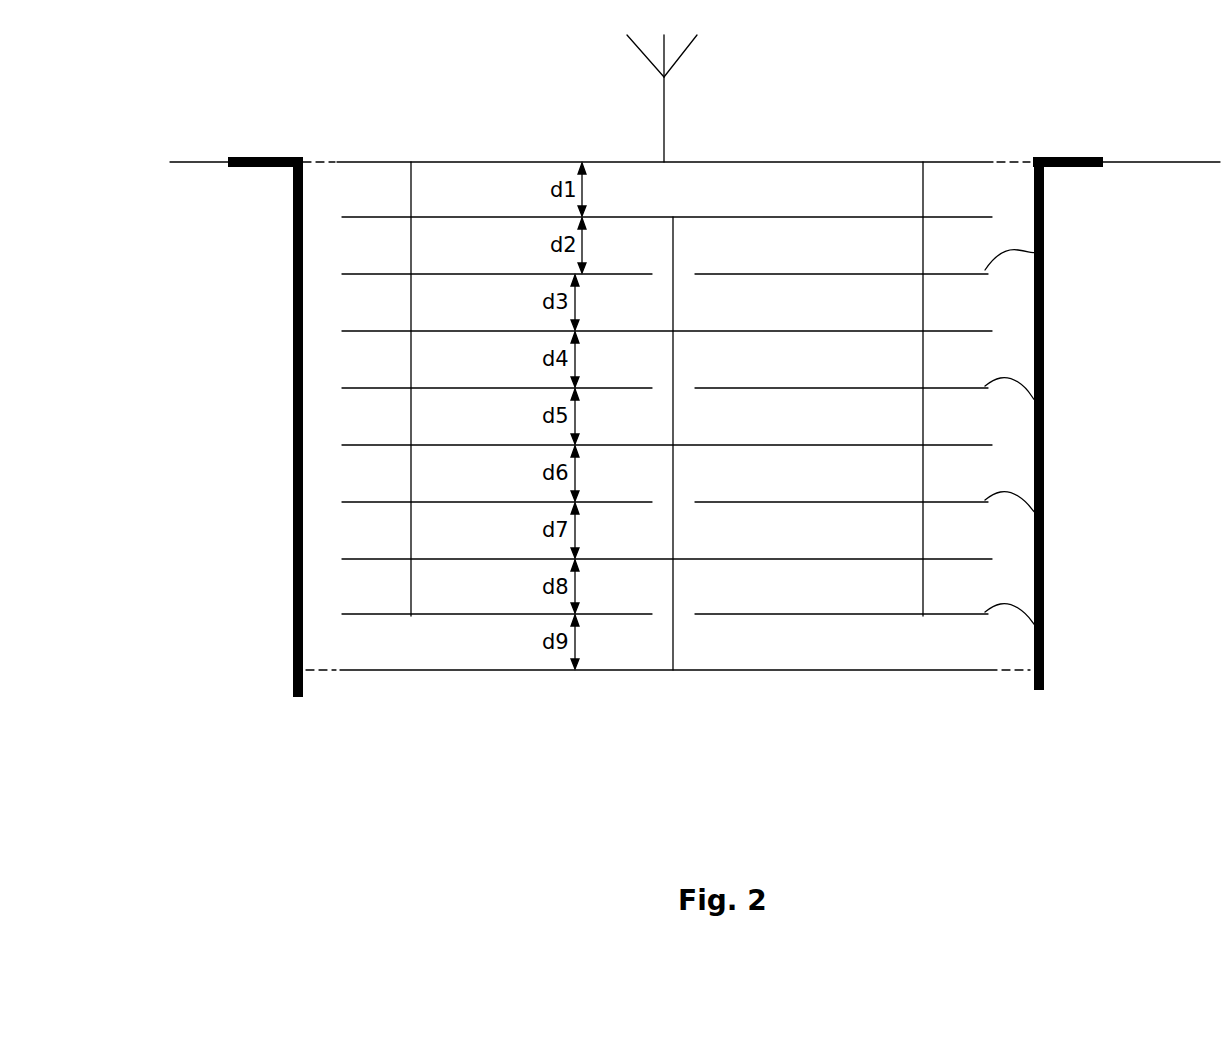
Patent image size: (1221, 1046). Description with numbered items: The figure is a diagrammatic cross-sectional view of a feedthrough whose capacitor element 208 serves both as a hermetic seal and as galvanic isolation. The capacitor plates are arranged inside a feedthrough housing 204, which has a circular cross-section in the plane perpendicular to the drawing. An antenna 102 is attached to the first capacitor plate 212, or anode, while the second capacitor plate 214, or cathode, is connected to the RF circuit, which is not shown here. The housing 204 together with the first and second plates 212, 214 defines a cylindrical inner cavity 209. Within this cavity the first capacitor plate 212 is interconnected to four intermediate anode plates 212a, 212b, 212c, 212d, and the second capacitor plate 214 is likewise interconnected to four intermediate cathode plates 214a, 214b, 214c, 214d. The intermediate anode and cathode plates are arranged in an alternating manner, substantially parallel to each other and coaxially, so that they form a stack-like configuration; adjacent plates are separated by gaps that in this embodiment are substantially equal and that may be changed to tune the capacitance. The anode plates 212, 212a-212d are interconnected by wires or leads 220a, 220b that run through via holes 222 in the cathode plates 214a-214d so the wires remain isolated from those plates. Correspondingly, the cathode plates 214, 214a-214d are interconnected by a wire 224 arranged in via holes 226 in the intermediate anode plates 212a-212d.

The antenna 102 is at (664, 82).
The feedthrough housing 204 is at (1044, 329).
The capacitor element 208 is at (462, 147).
The inner cavity 209 is at (416, 658).
The first capacitor plate 212 is at (835, 156).
The intermediate anode plate 212a is at (1044, 252).
The intermediate anode plate 212b is at (1044, 408).
The intermediate anode plate 212c is at (1044, 520).
The intermediate anode plate 212d is at (1044, 632).
The second capacitor plate 214 is at (850, 669).
The intermediate cathode plate 214a is at (343, 218).
The intermediate cathode plate 214b is at (344, 330).
The intermediate cathode plate 214c is at (344, 445).
The intermediate cathode plate 214d is at (344, 567).
The wire 220a is at (412, 362).
The wire 220b is at (921, 301).
The via holes 222 is at (401, 221).
The wire 224 is at (675, 414).
The via holes 226 is at (687, 276).